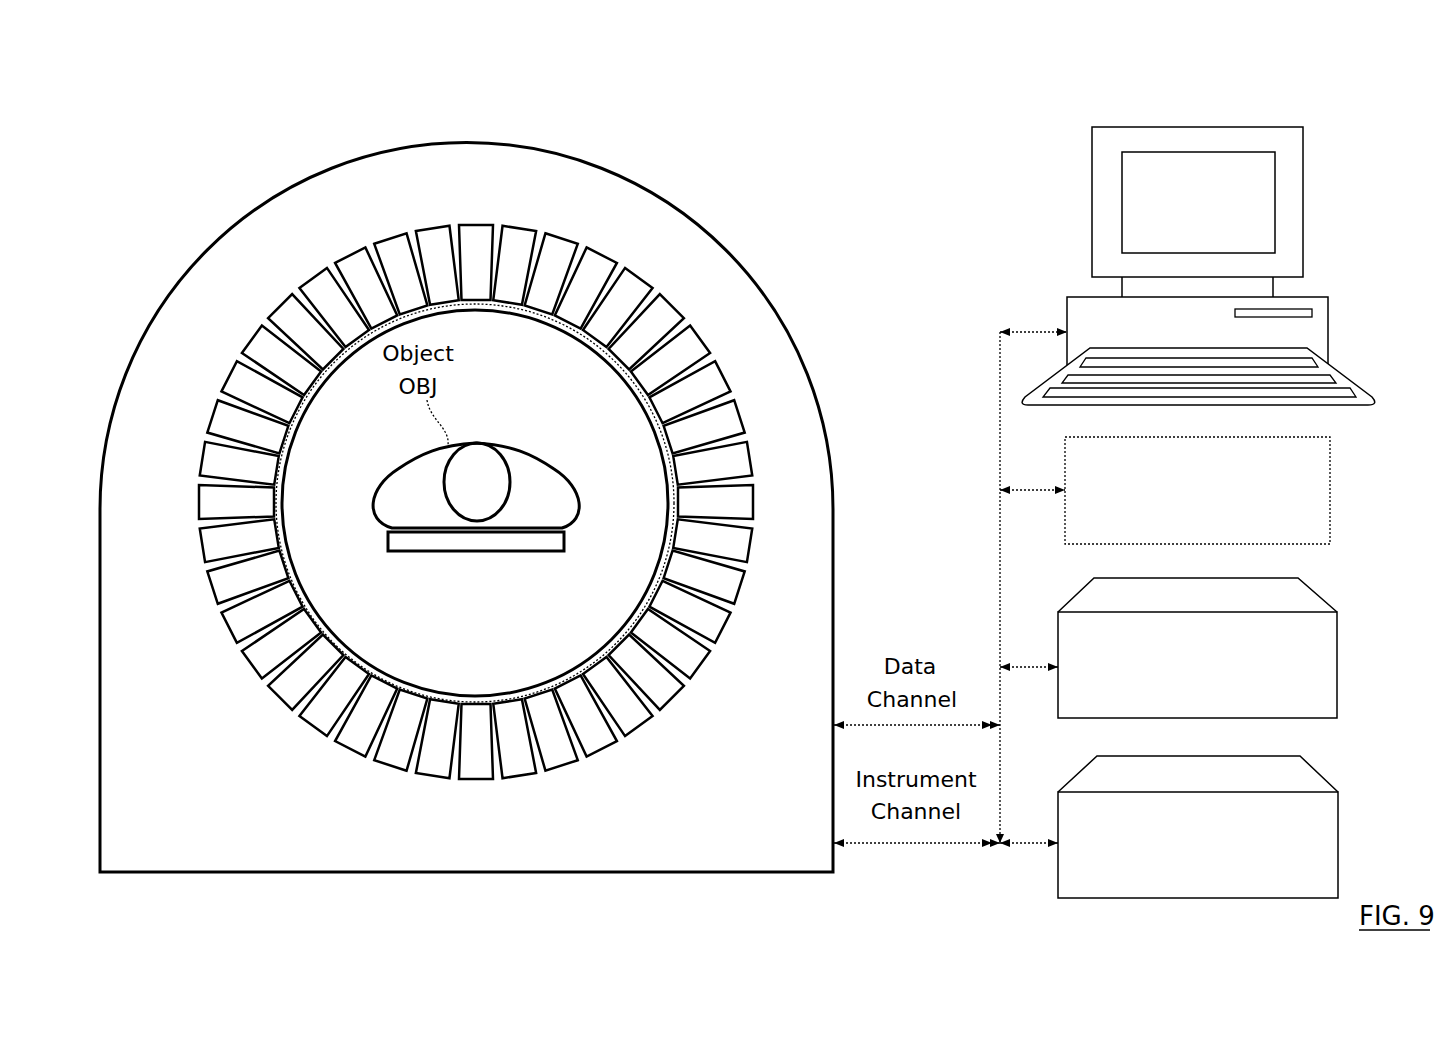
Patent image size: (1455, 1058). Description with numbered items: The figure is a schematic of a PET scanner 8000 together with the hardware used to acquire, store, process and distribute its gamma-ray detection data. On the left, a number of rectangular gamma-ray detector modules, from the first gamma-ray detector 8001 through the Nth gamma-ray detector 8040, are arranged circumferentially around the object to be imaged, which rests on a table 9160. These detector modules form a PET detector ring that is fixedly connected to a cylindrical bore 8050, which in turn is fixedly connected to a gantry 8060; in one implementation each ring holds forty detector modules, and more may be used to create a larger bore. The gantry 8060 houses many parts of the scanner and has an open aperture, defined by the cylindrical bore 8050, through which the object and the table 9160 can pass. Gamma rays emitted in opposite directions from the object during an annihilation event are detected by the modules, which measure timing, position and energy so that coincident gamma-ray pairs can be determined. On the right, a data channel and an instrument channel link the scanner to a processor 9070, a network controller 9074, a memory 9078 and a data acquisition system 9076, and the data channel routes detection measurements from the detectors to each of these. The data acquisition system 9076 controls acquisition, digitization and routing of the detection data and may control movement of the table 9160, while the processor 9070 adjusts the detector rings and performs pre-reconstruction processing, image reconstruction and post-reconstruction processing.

The PET scanner 8000 is at (904, 89).
The gamma-ray detector GRD1 8001 is at (569, 198).
The gamma-ray detector GRDN 8040 is at (440, 242).
The cylindrical bore 8050 is at (536, 422).
The gantry 8060 is at (752, 272).
The table 9160 is at (448, 552).
The processor 9070 is at (1275, 200).
The network controller 9074 is at (1332, 487).
The data acquisition system 9076 is at (1340, 843).
The memory 9078 is at (1339, 663).